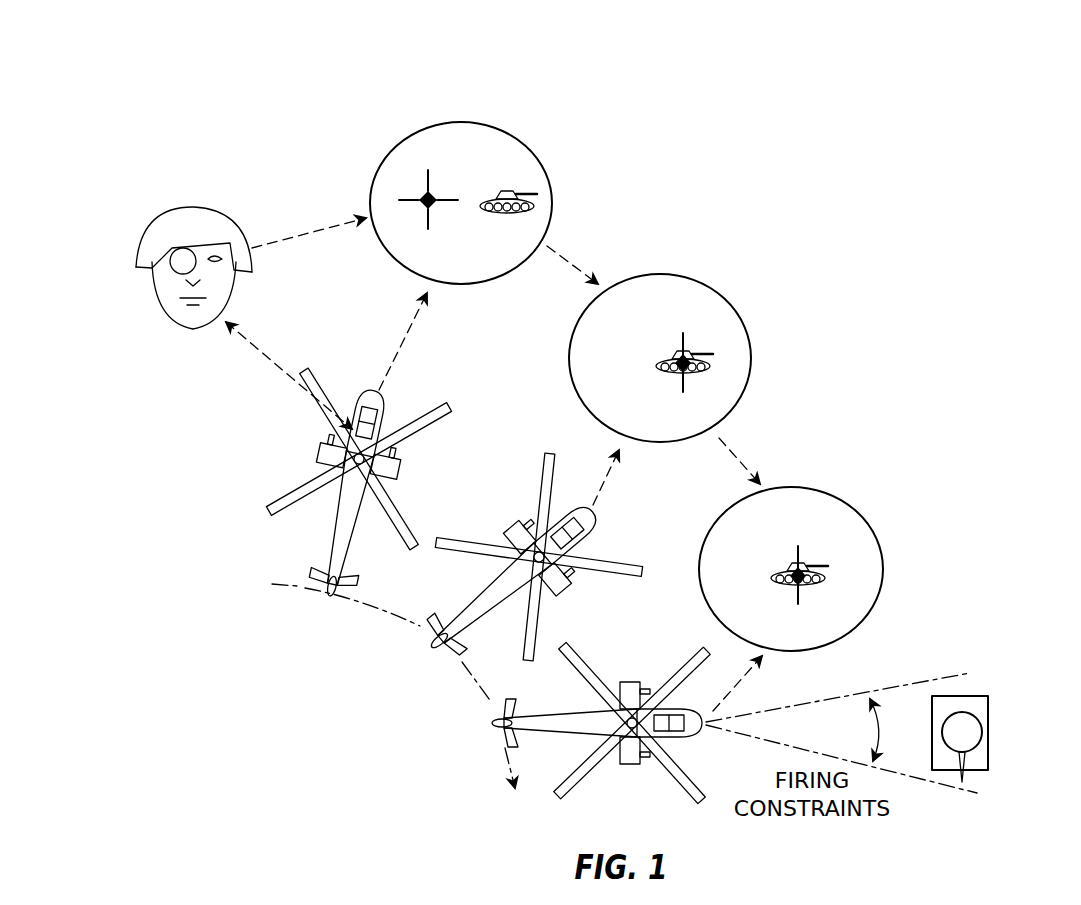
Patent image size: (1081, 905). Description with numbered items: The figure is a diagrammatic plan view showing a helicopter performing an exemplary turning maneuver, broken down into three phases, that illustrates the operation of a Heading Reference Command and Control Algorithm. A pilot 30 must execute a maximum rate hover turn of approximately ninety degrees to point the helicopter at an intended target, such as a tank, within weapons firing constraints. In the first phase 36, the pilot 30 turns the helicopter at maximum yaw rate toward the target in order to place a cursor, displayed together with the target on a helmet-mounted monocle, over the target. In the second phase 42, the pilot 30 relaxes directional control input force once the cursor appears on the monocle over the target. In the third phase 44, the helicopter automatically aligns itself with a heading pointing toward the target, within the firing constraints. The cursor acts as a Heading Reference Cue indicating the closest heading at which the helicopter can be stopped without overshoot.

The pilot 30 is at (152, 292).
The first phase 36 is at (565, 90).
The second phase 42 is at (725, 245).
The third phase 44 is at (855, 443).